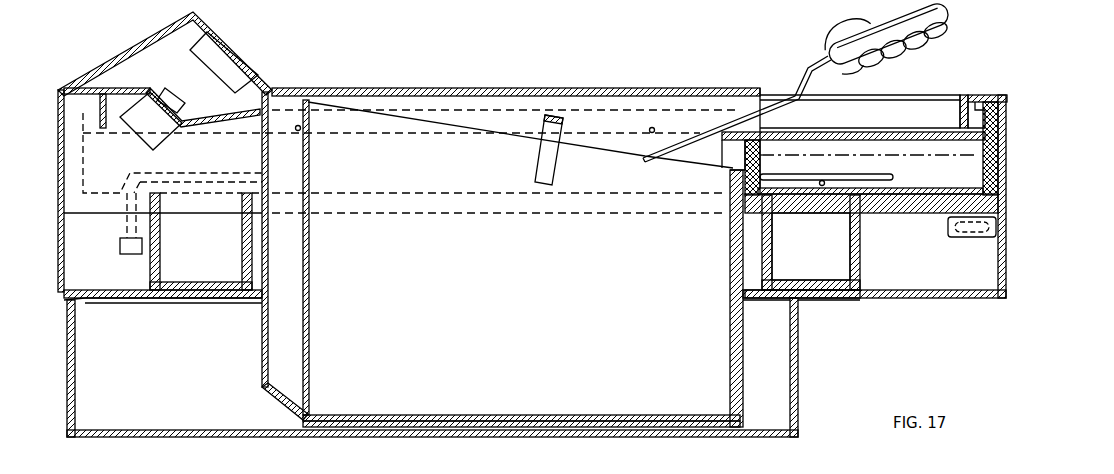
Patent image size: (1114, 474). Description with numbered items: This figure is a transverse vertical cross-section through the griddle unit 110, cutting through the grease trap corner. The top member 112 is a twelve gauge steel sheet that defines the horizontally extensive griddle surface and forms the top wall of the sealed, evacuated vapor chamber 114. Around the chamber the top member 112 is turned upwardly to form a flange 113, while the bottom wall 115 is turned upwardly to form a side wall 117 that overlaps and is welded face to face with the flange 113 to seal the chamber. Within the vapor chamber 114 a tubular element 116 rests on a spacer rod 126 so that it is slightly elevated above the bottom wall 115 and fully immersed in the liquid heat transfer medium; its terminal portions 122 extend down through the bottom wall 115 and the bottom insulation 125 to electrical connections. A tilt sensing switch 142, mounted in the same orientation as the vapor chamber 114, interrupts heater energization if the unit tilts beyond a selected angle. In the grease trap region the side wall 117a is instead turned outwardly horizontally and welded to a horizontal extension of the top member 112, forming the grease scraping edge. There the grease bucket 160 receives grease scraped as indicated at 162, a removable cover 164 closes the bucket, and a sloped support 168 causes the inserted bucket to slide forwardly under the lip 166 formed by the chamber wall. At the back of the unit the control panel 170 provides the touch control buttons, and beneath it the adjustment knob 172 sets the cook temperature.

The griddle unit 110 is at (1058, 70).
The top member 112 is at (883, 133).
The flange 113 is at (982, 100).
The vapor chamber 114 is at (941, 181).
The bottom wall 115 is at (895, 196).
The tubular element 116 is at (855, 175).
The side wall 117 is at (993, 160).
The side wall 117a is at (735, 172).
The terminal portions 122 is at (125, 223).
The bottom insulation 125 is at (888, 210).
The spacer rod 126 is at (828, 197).
The tilt sensing switch 142 is at (973, 238).
The grease bucket 160 is at (310, 353).
The grease scraping 162 is at (806, 64).
The removable cover 164 is at (505, 88).
The lip 166 is at (733, 140).
The sloped support 168 is at (267, 397).
The control panel 170 is at (207, 30).
The adjustment knob 172 is at (167, 88).